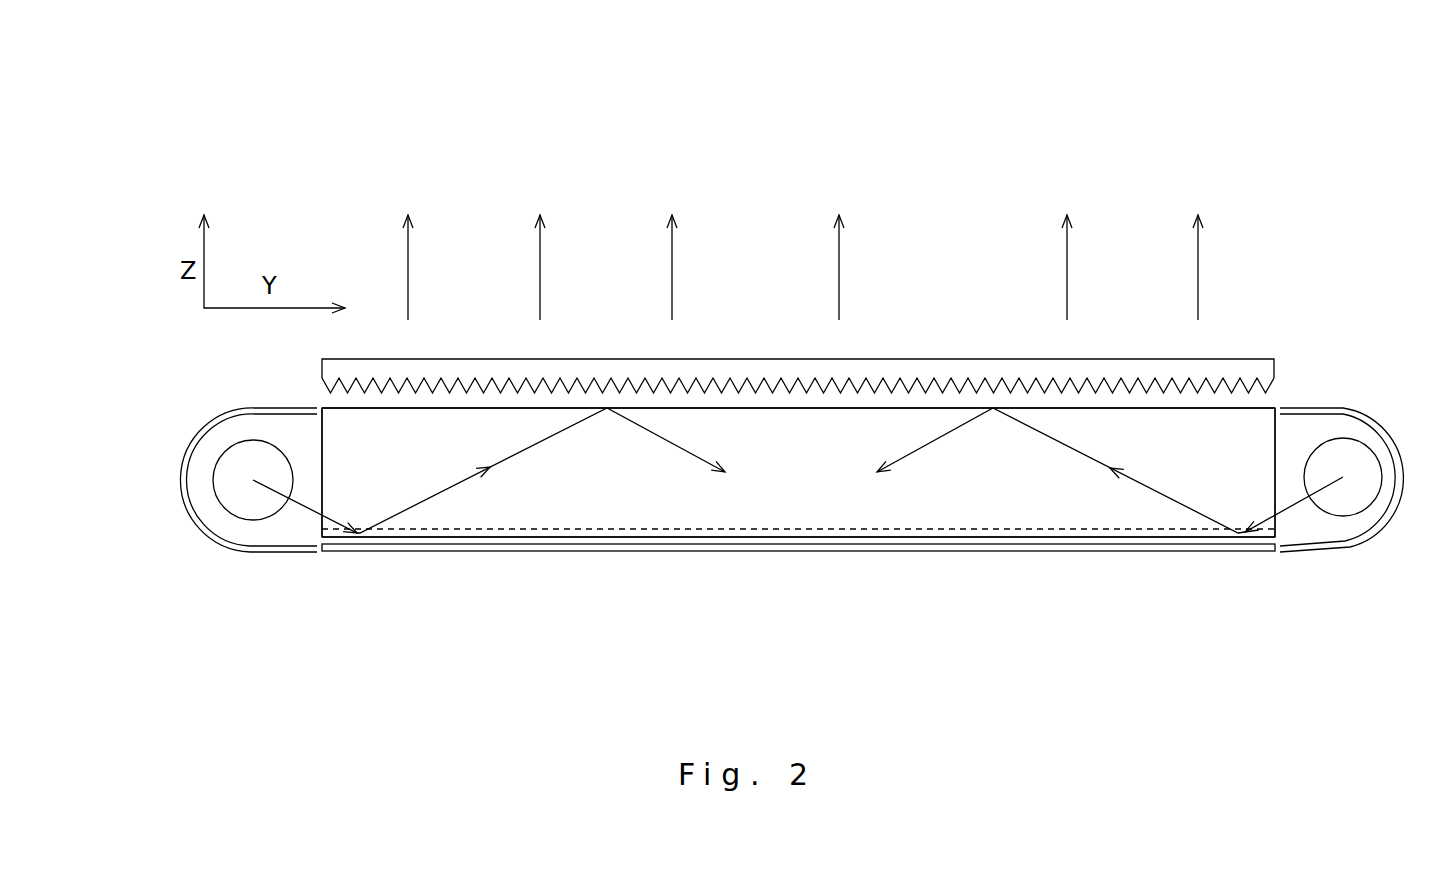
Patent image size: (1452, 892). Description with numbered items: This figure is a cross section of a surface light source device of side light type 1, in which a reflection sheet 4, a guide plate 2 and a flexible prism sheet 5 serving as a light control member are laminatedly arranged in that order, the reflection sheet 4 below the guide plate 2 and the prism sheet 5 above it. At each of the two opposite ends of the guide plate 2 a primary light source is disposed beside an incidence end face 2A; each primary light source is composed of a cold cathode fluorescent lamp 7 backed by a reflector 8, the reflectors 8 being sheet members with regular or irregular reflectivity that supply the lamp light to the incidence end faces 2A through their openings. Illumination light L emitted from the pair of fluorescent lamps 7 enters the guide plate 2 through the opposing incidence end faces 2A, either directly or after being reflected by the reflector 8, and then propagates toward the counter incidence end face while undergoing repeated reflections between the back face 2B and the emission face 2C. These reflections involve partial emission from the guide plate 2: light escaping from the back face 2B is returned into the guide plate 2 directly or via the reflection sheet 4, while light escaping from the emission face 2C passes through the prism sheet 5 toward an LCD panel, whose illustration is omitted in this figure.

The surface light source device of side light type 1 is at (970, 71).
The guide plate 2 is at (883, 437).
The incidence end faces 2A is at (883, 468).
The back face 2B is at (798, 573).
The emission face 2C is at (745, 408).
The reflection sheet 4 is at (798, 581).
The prism sheet 5 is at (849, 371).
The cold cathode lamp (fluorescent lamp) 7 is at (797, 528).
The reflector 8 is at (761, 513).
The illumination light L is at (798, 436).